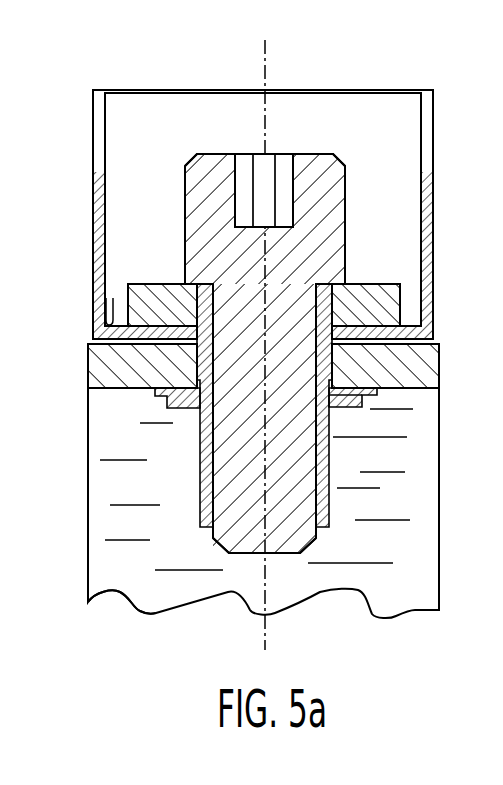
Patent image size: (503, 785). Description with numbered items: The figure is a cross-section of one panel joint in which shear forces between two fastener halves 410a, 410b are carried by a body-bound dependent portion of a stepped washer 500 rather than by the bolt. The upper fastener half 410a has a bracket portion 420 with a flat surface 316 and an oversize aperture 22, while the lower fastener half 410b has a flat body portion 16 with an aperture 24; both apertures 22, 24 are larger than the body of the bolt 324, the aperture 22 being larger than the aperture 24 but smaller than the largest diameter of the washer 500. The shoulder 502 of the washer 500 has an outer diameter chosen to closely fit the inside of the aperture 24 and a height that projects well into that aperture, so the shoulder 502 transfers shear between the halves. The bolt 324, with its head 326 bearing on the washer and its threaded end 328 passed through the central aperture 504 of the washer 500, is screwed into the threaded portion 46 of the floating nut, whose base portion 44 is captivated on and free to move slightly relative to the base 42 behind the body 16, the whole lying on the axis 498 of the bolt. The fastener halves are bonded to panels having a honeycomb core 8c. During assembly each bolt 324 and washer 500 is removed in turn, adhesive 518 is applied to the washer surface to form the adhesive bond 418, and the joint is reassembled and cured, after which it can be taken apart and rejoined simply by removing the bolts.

The axis of the bolt 498 is at (263, 47).
The stepped washer 500 is at (405, 308).
The fastener half 410a is at (421, 118).
The fastener half 410b is at (88, 366).
The adhesive 518 is at (405, 325).
The flat surface 316 is at (112, 327).
The bracket portion 420 is at (107, 299).
The adhesive bond 418 is at (157, 288).
The central aperture of the washer 504 is at (345, 307).
The aperture 22 is at (195, 355).
The aperture 24 is at (200, 410).
The base 42 is at (377, 393).
The base portion of the nut 44 is at (345, 407).
The threaded portion 46 is at (332, 488).
The flat body portion 16 is at (128, 390).
The shoulder 502 is at (385, 357).
The honeycomb core 8c is at (158, 605).
The head 326 is at (266, 323).
The bolt 324 is at (205, 203).
The threaded end 328 is at (302, 548).